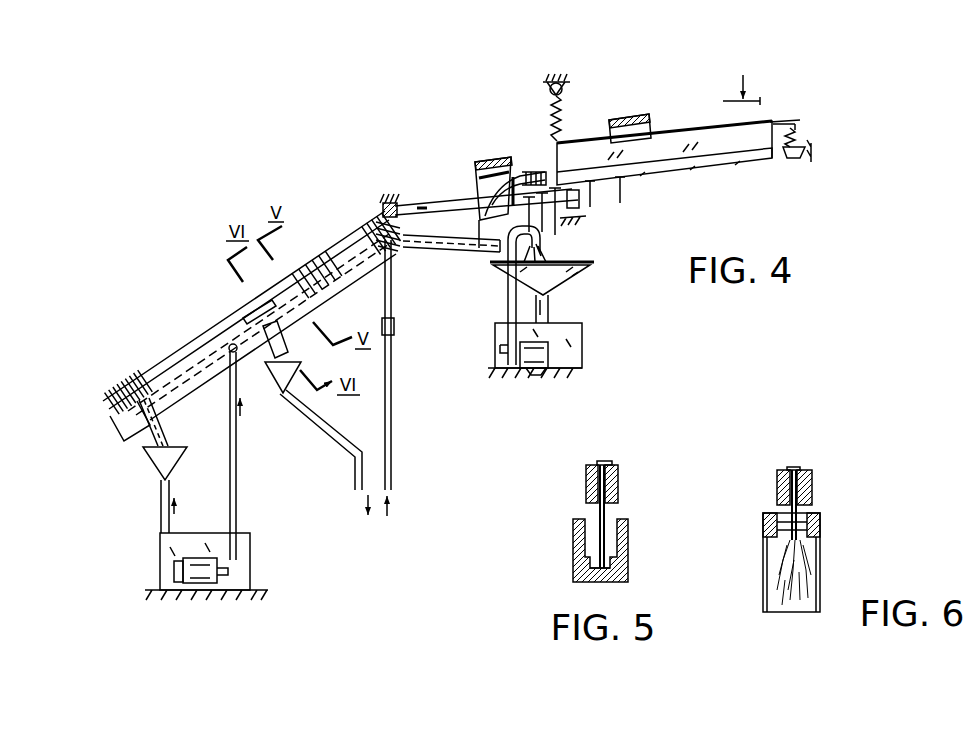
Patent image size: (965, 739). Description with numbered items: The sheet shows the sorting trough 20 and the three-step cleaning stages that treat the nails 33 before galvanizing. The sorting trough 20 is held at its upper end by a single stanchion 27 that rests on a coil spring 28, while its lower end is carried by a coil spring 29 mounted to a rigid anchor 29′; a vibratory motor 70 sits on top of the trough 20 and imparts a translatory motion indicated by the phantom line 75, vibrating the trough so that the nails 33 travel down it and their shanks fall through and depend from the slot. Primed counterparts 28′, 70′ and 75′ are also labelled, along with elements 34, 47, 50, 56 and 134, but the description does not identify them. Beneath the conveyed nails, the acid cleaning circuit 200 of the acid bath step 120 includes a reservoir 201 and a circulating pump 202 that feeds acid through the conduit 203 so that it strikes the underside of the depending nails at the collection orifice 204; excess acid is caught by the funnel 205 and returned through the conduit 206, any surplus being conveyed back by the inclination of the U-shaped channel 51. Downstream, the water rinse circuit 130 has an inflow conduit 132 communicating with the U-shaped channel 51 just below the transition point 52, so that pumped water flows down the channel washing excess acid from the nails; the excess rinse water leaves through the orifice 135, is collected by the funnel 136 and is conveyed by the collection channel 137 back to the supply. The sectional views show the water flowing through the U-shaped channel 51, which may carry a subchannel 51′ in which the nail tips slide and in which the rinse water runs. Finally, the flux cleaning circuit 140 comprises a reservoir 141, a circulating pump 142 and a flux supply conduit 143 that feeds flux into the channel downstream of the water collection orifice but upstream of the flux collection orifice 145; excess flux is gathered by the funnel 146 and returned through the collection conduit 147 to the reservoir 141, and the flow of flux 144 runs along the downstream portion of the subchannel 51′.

In FIG. 4, the sorting trough 20 is at (742, 164).
In FIG. 4, the single stanchion 27 is at (800, 122).
In FIG. 4, the coil spring 28 is at (806, 134).
In FIG. 4, the support hangers 28′ is at (588, 216).
In FIG. 4, the coil spring 29 is at (567, 111).
In FIG. 4, the rigid anchor 29′ is at (563, 79).
In FIG. 4, the nails 33 is at (765, 101).
In FIG. 5, the nails 33 is at (612, 460).
In FIG. 6, the nails 33 is at (801, 465).
In FIG. 4, the actuator rod 34 is at (748, 75).
In FIG. 4, the mounting block 47 is at (398, 200).
In FIG. 5, the socket block 50 is at (634, 543).
In FIG. 4, the U-shaped channel 51 is at (440, 246).
In FIG. 5, the U-shaped channel 51 is at (630, 574).
In FIG. 6, the U-shaped channel 51 is at (815, 483).
In FIG. 5, the subchannel 51′ is at (573, 567).
In FIG. 4, the transition point 52 is at (405, 253).
In FIG. 5, the guide block 56 is at (620, 483).
In FIG. 4, the vibratory motor 70 is at (650, 117).
In FIG. 4, the nozzle housing 70′ is at (506, 157).
In FIG. 4, the phantom line 75 is at (622, 118).
In FIG. 4, the hatched nozzle plate 75′ is at (486, 160).
In FIG. 4, the acid bath 120 is at (637, 316).
In FIG. 4, the water rinse circuit 130 is at (402, 411).
In FIG. 4, the inflow conduit 132 is at (398, 382).
In FIG. 4, the inclined conveyor tube 134 is at (347, 268).
In FIG. 6, the inclined conveyor tube 134 is at (819, 549).
In FIG. 4, the orifice 135 is at (291, 348).
In FIG. 4, the funnel 136 is at (274, 390).
In FIG. 4, the collection channel 137 is at (360, 466).
In FIG. 6, the collection channel 137 is at (824, 580).
In FIG. 4, the flux cleaning circuit 140 is at (242, 505).
In FIG. 4, the reservoir 141 is at (248, 555).
In FIG. 4, the circulating pump 142 is at (211, 593).
In FIG. 4, the flux supply conduit 143 is at (238, 458).
In FIG. 4, the flow of flux 144 is at (170, 390).
In FIG. 4, the flux collection orifice 145 is at (162, 425).
In FIG. 4, the funnel 146 is at (148, 460).
In FIG. 4, the collection conduit 147 is at (159, 517).
In FIG. 4, the acid cleaning circuit 200 is at (584, 361).
In FIG. 4, the reservoir 201 is at (578, 335).
In FIG. 4, the circulating pump 202 is at (549, 372).
In FIG. 4, the conduit 203 is at (506, 302).
In FIG. 4, the collection orifice 204 is at (548, 229).
In FIG. 4, the funnel 205 is at (586, 276).
In FIG. 4, the conduit 206 is at (550, 309).